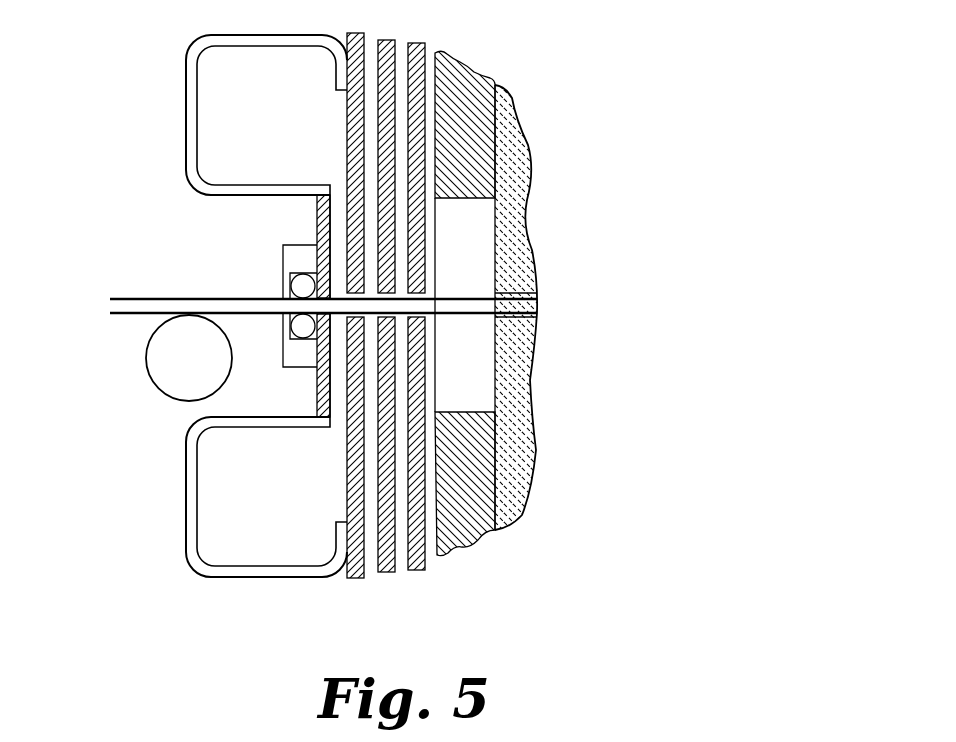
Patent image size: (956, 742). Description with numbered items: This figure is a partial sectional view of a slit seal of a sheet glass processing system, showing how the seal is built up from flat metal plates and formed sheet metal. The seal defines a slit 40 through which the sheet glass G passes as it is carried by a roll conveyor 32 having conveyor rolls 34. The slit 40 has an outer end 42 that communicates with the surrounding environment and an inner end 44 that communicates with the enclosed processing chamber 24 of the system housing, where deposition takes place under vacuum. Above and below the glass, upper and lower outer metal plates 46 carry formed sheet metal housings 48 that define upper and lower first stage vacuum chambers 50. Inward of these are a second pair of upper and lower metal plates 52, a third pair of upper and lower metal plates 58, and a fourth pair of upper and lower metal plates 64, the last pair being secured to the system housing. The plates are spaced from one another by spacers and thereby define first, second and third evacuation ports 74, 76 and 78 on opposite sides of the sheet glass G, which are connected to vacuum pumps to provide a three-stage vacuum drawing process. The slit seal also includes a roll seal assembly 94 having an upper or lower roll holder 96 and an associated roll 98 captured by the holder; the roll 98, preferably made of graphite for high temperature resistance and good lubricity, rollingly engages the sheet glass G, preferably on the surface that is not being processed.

The formed sheet metal housing 48 is at (190, 62).
The first stage vacuum chamber 50 is at (259, 85).
The outer metal plate 46 is at (316, 205).
The first evacuation port 74 is at (342, 277).
The roll holder 96 is at (285, 247).
The outer end 42 is at (290, 280).
The roll seal assembly 94 is at (275, 292).
The roll 98 is at (300, 318).
The sheet glass G is at (115, 299).
The conveyor roll 34 is at (147, 364).
The roll conveyor 32 is at (118, 389).
The second pair of metal plates 52 is at (356, 140).
The second evacuation port 76 is at (372, 277).
The third pair of metal plates 58 is at (386, 106).
The slit 40 is at (400, 292).
The fourth pair of metal plates 64 is at (425, 135).
The third evacuation port 78 is at (430, 292).
The inner end 44 is at (470, 298).
The processing chamber 24 is at (483, 337).